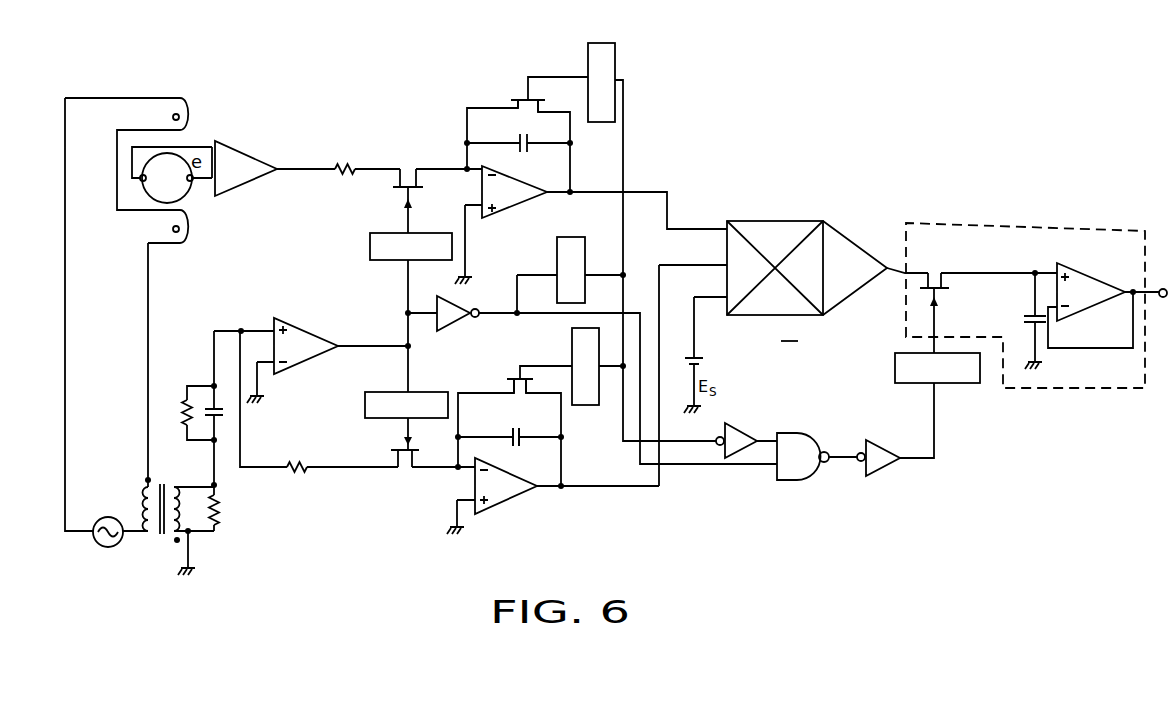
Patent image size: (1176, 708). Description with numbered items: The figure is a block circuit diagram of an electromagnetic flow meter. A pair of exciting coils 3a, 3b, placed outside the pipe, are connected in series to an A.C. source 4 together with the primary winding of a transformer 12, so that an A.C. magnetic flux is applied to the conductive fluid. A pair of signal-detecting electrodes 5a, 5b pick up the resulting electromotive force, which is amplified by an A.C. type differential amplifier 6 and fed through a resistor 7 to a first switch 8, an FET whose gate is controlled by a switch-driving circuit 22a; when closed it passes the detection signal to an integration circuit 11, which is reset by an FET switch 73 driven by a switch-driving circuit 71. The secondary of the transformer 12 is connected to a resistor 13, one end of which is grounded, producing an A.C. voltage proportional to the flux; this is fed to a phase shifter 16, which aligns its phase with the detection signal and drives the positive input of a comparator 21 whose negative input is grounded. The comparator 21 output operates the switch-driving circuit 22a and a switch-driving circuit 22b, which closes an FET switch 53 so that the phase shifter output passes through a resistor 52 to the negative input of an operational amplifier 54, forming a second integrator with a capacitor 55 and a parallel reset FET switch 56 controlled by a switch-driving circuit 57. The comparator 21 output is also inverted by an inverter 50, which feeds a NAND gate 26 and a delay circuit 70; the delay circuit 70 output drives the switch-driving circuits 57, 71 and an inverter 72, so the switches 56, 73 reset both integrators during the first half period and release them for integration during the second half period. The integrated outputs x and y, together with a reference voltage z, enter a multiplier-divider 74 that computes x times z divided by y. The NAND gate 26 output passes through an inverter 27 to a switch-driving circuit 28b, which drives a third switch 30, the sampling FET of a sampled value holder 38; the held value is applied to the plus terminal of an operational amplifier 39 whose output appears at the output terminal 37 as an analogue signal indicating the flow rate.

The exciting coil 3a is at (179, 116).
The exciting coil 3b is at (179, 229).
The A.C. source 4 is at (105, 547).
The signal-detecting electrode 5a is at (191, 181).
The signal-detecting electrode 5b is at (141, 181).
The A.C. type differential amplifier 6 is at (237, 150).
The resistor 7 is at (341, 166).
The first switch 8 is at (407, 167).
The integration circuit 11 is at (549, 174).
The transformer 12 is at (164, 483).
The resistor 13 is at (217, 508).
The phase shifter 16 is at (184, 400).
The comparator 21 is at (307, 306).
The switch-driving circuit 22a is at (370, 246).
The switch-driving circuit 22b is at (365, 405).
The NAND gate 26 is at (806, 481).
The inverter 27 is at (888, 466).
The switch-driving circuit 28b is at (958, 384).
The third switch 30 is at (935, 273).
The output terminal 37 is at (1163, 298).
The sampled value holder 38 is at (1052, 389).
The operational amplifier 39 is at (1090, 277).
The inverter 50 is at (462, 332).
The resistor 52 is at (298, 468).
The FET switch 53 is at (402, 468).
The operational amplifier 54 is at (517, 478).
The capacitor 55 is at (512, 435).
The FET switch 56 is at (518, 378).
The switch-driving circuit 57 is at (585, 405).
The delay circuit 70 is at (572, 237).
The switch-driving circuit 71 is at (617, 56).
The inverter 72 is at (740, 430).
The FET switch 73 is at (526, 96).
The multiplier-divider 74 is at (778, 221).